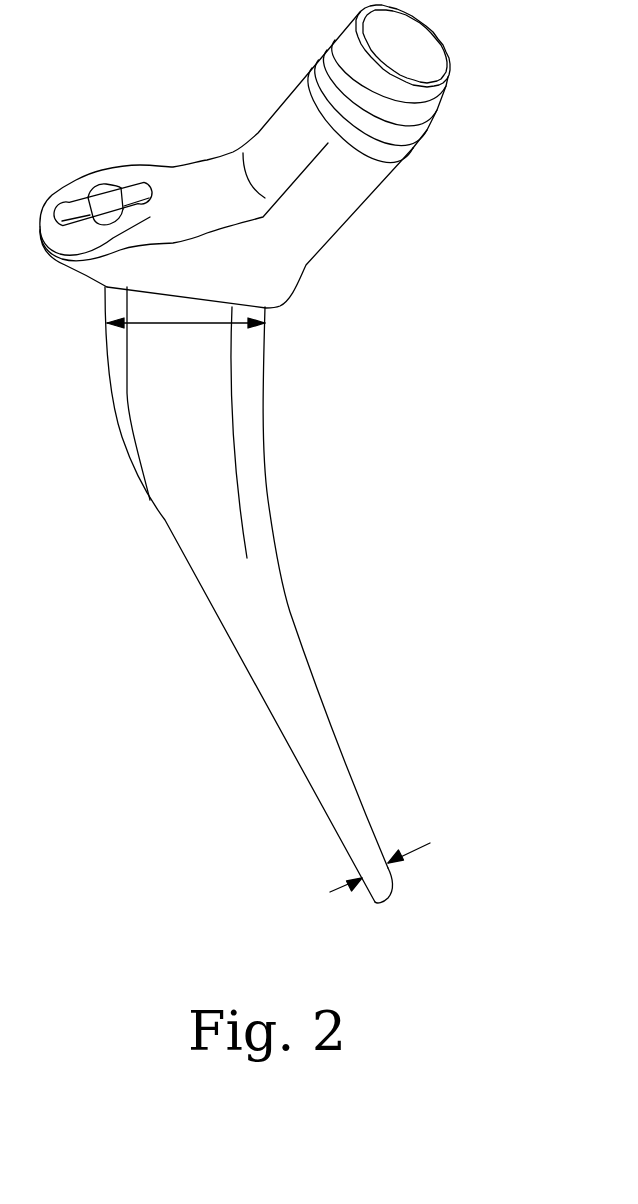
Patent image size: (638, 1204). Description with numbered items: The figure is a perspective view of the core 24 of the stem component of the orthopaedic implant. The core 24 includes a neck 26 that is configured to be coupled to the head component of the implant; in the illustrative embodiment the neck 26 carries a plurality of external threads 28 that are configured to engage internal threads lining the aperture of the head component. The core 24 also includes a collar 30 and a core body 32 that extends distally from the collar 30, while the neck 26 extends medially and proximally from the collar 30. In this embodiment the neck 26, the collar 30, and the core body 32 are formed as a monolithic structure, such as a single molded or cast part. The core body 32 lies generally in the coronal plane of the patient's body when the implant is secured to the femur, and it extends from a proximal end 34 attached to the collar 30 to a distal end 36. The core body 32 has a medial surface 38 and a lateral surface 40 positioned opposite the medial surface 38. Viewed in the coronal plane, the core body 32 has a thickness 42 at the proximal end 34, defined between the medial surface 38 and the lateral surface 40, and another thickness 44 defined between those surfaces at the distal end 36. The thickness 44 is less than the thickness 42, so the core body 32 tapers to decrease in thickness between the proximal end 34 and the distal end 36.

The core 24 is at (333, 193).
The neck 26 is at (368, 155).
The external threads 28 is at (337, 48).
The collar 30 is at (283, 283).
The core body 32 is at (260, 548).
The proximal end 34 is at (133, 297).
The distal end 36 is at (387, 885).
The medial surface 38 is at (254, 424).
The lateral surface 40 is at (122, 435).
The thickness 42 is at (187, 325).
The thickness 44 is at (373, 872).